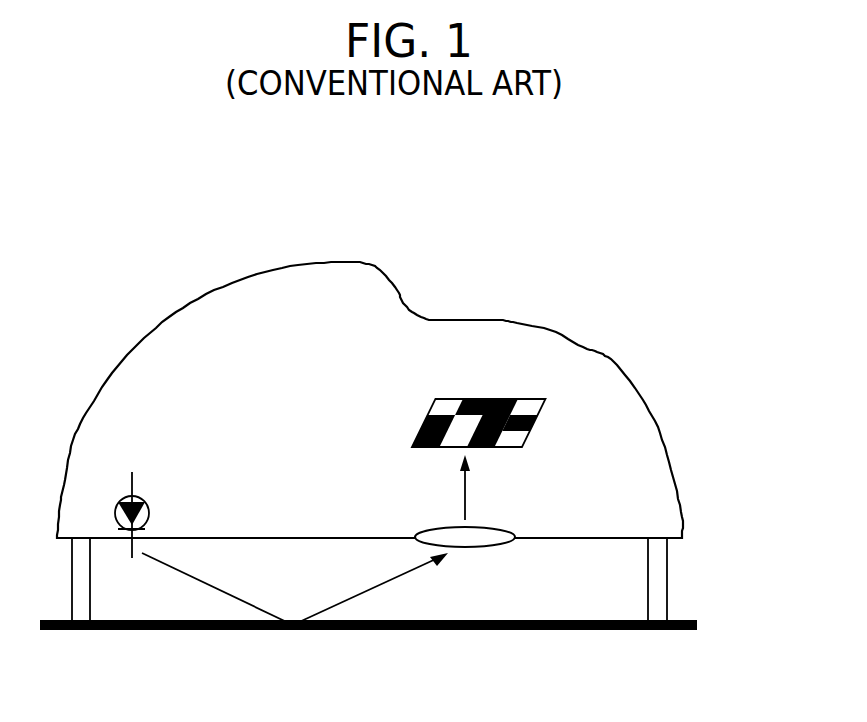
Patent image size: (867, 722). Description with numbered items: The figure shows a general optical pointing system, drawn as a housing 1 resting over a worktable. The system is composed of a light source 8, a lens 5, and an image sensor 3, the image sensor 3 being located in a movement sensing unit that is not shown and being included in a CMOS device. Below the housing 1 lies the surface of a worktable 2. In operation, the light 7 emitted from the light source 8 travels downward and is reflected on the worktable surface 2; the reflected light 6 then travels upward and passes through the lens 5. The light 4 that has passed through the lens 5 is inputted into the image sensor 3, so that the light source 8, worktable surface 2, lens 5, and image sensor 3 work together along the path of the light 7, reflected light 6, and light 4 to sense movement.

The housing 1 is at (617, 365).
The surface of a worktable 2 is at (477, 631).
The image sensor 3 is at (500, 396).
The light 4 is at (462, 478).
The lens 5 is at (508, 528).
The reflected light 6 is at (352, 597).
The light 7 is at (220, 588).
The light source 8 is at (150, 513).